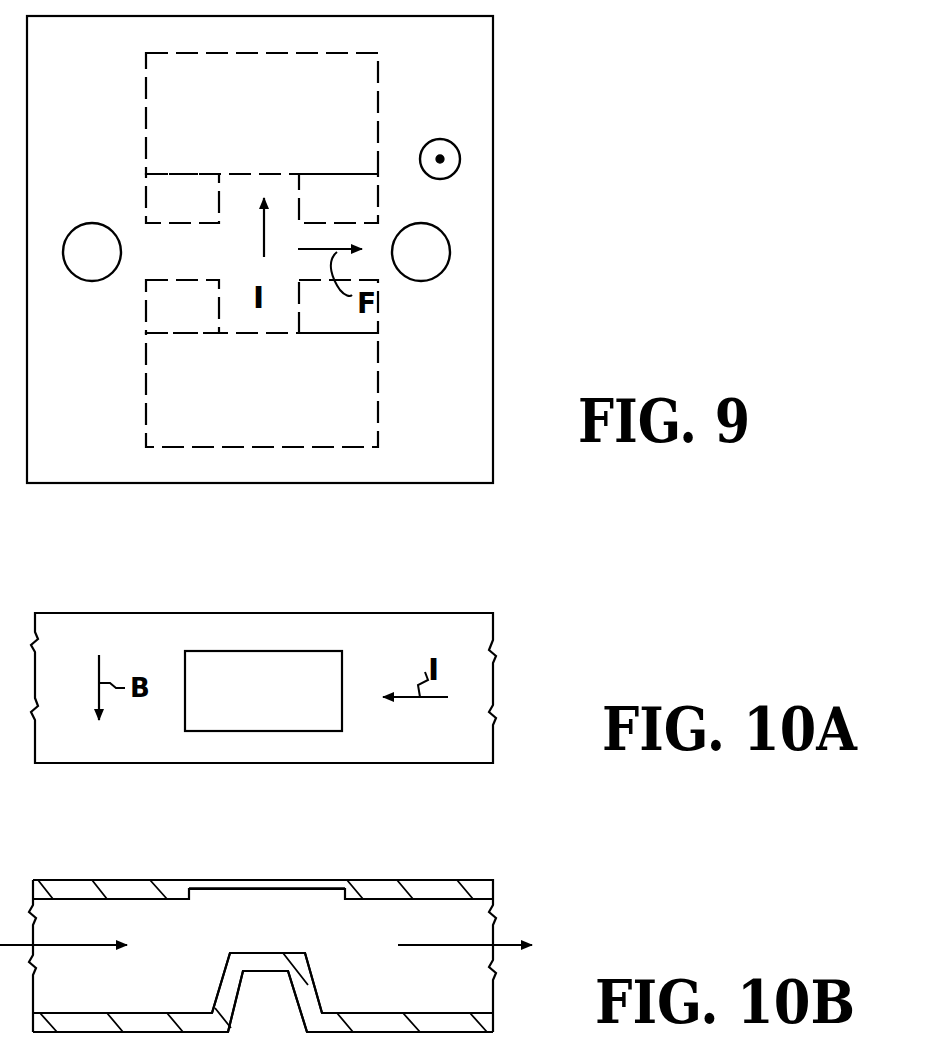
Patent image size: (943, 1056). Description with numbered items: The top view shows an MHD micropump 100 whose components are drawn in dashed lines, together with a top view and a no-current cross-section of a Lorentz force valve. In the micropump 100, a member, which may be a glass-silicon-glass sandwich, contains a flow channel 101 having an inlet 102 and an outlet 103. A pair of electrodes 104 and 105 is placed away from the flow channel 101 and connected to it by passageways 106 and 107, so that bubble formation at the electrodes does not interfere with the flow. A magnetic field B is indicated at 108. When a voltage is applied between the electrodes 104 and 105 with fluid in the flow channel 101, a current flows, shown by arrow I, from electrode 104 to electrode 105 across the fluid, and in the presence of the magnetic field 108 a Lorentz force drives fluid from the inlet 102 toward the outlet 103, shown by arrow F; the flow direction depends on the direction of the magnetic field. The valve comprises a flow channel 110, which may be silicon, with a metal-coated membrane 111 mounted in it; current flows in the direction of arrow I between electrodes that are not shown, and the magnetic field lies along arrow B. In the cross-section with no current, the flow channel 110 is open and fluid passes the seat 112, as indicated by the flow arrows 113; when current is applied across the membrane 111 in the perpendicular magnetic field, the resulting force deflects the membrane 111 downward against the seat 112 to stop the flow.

In FIG. 9, the magnetic head 100 is at (468, 57).
In FIG. 9, the flow channel 101 is at (369, 240).
In FIG. 9, the inlet 102 is at (82, 243).
In FIG. 9, the outlet 103 is at (431, 257).
In FIG. 9, the electrode 104 is at (290, 417).
In FIG. 9, the electrode 105 is at (205, 90).
In FIG. 9, the passageway 106 is at (245, 315).
In FIG. 9, the passageway 107 is at (240, 201).
In FIG. 9, the magnetic field 108 is at (445, 159).
In FIG. 10A, the flow channel 110 is at (310, 613).
In FIG. 10B, the flow channel 110 is at (80, 880).
In FIG. 10A, the membrane 111 is at (292, 703).
In FIG. 10B, the membrane 111 is at (295, 880).
In FIG. 10B, the seat 112 is at (297, 998).
In FIG. 10B, the current path 113 is at (72, 945).